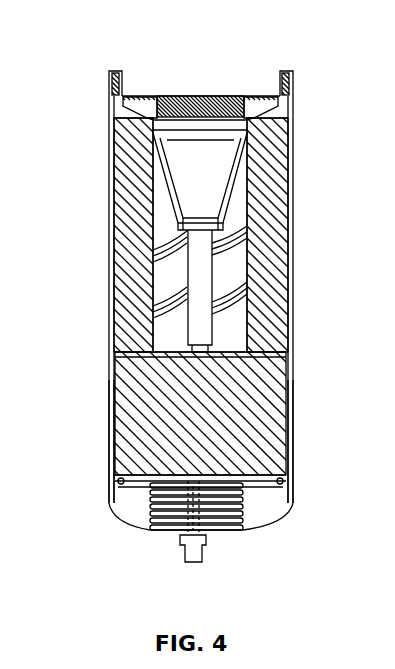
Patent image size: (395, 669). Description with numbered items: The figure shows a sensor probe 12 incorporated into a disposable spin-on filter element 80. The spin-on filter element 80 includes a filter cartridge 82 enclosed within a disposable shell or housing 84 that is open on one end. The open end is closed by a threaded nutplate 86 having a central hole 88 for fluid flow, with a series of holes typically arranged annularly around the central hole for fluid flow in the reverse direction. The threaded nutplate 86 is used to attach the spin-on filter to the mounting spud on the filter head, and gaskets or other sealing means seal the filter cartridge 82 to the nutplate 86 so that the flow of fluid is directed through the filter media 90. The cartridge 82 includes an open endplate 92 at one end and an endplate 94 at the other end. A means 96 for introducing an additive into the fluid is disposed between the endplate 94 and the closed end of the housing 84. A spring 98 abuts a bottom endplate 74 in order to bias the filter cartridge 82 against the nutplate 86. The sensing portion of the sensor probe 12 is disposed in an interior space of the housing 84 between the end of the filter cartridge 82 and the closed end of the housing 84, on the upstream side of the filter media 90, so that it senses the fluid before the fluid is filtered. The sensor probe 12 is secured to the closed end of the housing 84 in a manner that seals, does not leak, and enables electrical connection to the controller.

The sensor probe 12 is at (190, 566).
The bottom endplate 74 is at (266, 492).
The spin-on filter element 80 is at (90, 228).
The filter cartridge 82 is at (140, 176).
The housing 84 is at (107, 452).
The threaded nutplate 86 is at (158, 92).
The central hole 88 is at (198, 94).
The filter media 90 is at (126, 311).
The open endplate 92 is at (125, 118).
The endplate 94 is at (113, 353).
The means for introducing an additive 96 is at (142, 413).
The spring 98 is at (237, 527).